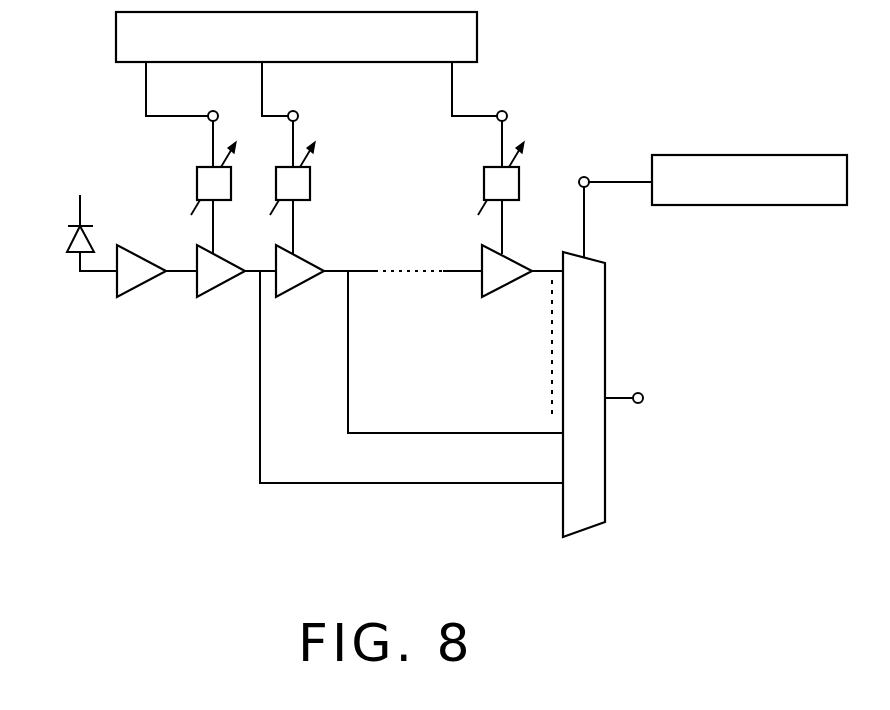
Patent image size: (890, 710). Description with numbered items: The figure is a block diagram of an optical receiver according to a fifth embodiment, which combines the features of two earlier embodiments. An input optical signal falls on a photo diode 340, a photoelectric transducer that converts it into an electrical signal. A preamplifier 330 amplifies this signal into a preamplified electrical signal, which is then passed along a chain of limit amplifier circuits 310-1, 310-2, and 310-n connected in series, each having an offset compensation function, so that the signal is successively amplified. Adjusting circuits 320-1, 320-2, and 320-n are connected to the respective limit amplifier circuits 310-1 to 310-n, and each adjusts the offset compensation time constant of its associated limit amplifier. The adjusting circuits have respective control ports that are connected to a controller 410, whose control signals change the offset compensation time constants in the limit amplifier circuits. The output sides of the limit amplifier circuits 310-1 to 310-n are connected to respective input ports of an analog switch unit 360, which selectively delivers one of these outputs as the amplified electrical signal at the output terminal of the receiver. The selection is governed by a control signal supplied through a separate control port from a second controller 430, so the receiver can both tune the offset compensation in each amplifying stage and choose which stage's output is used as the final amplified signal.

The controller 410 is at (477, 40).
The controller 430 is at (735, 206).
The photo diode 340 is at (68, 256).
The preamplifier 330 is at (135, 296).
The adjusting circuit 320-1 is at (197, 171).
The adjusting circuit 320-2 is at (311, 171).
The adjusting circuit 320-n is at (484, 171).
The limit amplifier circuit 310-1 is at (218, 296).
The limit amplifier circuit 310-2 is at (300, 296).
The limit amplifier circuit 310-n is at (505, 296).
The analog switch unit 360 is at (591, 539).